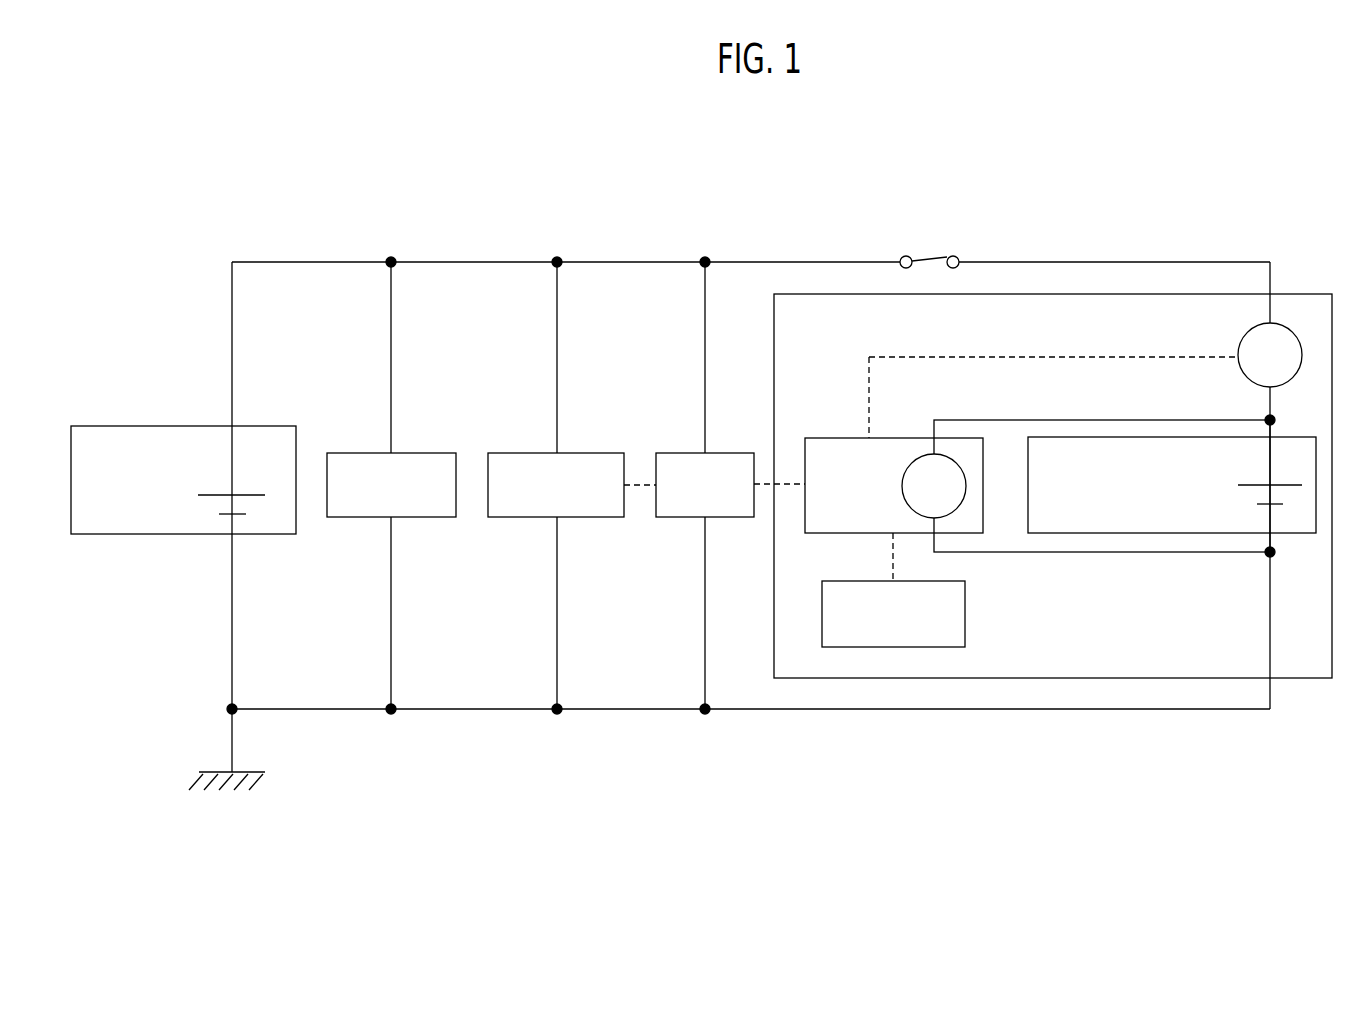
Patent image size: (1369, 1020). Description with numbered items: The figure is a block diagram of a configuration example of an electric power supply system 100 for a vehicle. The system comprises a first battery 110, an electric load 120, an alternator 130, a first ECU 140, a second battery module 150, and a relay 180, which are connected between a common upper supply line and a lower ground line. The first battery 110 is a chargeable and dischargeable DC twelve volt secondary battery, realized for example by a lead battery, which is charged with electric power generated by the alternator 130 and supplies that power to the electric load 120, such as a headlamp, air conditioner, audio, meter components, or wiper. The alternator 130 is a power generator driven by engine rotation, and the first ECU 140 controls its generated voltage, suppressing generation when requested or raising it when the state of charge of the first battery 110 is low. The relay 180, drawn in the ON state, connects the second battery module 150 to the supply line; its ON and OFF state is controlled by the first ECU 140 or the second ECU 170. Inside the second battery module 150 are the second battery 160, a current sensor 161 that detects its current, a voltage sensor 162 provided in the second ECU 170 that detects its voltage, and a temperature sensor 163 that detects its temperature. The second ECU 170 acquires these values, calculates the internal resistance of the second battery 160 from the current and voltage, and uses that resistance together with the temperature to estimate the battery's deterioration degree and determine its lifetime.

The electric power supply system for a vehicle 100 is at (728, 827).
The first battery 110 is at (262, 425).
The electric load 120 is at (432, 452).
The alternator 130 is at (598, 452).
The first ECU 140 is at (724, 452).
The second battery module 150 is at (1289, 293).
The second battery 160 is at (1290, 437).
The current sensor 161 is at (1243, 338).
The voltage sensor 162 is at (966, 487).
The temperature sensor 163 is at (965, 606).
The second ECU 170 is at (895, 437).
The relay 180 is at (927, 255).